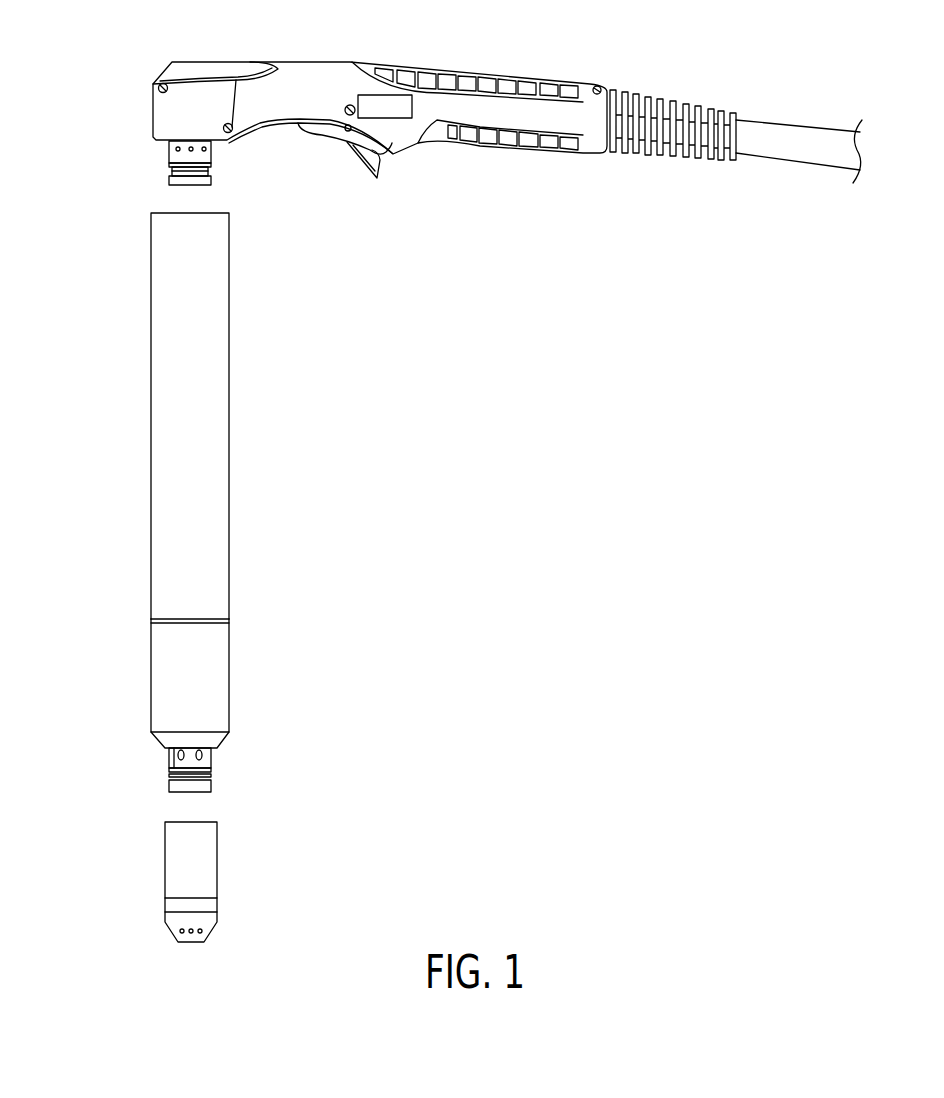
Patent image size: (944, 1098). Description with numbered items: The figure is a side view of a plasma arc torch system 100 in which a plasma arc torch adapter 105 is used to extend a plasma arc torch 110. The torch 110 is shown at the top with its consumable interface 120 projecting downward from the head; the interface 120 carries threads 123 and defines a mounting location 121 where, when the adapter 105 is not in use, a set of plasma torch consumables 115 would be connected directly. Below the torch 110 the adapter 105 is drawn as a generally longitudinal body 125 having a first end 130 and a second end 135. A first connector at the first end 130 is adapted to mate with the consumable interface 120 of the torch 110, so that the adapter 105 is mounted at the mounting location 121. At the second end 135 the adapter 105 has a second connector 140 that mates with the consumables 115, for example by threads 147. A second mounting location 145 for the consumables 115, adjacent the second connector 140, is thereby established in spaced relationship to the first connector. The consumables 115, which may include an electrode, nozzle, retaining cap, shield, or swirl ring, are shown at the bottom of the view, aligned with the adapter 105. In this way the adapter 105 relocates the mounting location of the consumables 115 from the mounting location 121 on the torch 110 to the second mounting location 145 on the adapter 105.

The plasma arc torch system 100 is at (77, 56).
The plasma arc torch adapter 105 is at (258, 510).
The plasma arc torch 110 is at (447, 167).
The plasma torch consumables 115 is at (126, 870).
The consumable interface 120 is at (173, 155).
The mounting location 121 is at (182, 198).
The threads 123 is at (208, 167).
The generally longitudinal body 125 is at (160, 515).
The first end 130 is at (220, 235).
The second end 135 is at (213, 715).
The second connector 140 is at (200, 762).
The second mounting location 145 is at (176, 802).
The threads 147 is at (210, 778).